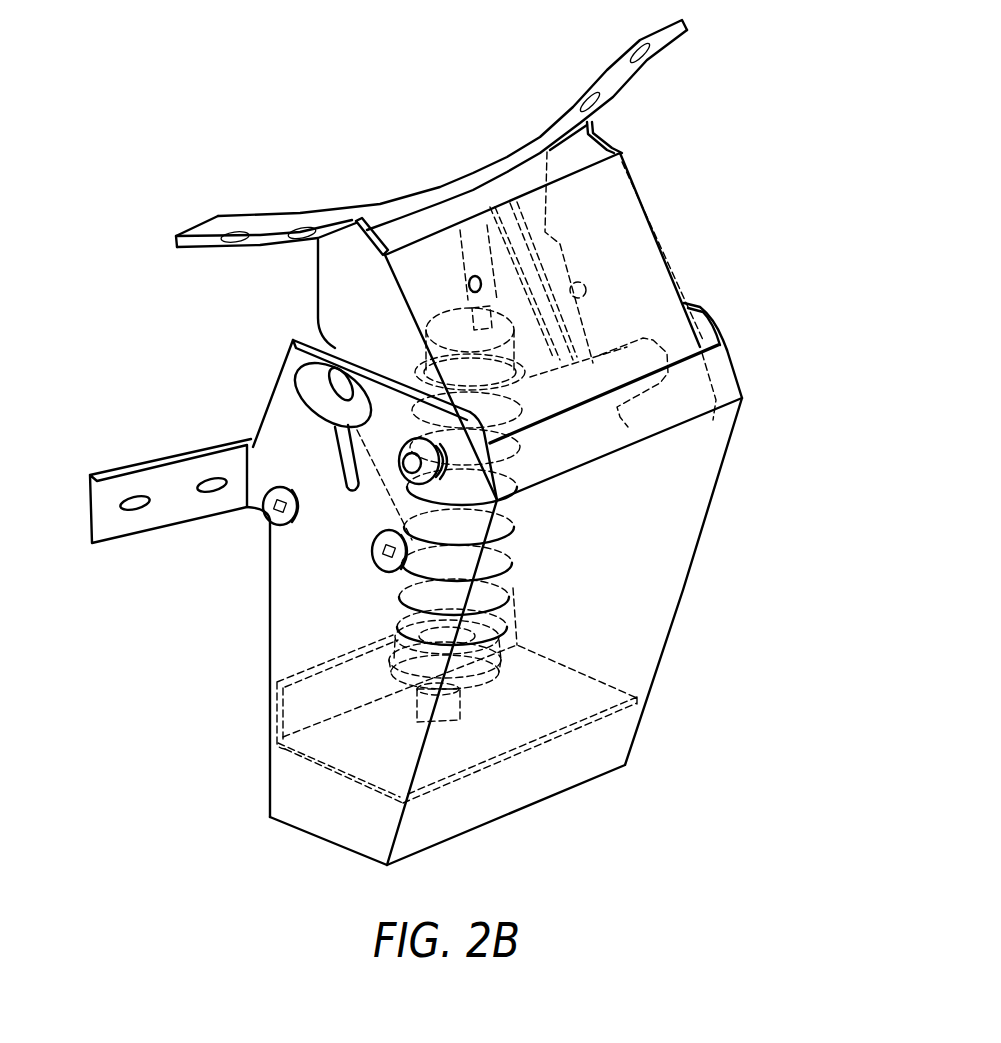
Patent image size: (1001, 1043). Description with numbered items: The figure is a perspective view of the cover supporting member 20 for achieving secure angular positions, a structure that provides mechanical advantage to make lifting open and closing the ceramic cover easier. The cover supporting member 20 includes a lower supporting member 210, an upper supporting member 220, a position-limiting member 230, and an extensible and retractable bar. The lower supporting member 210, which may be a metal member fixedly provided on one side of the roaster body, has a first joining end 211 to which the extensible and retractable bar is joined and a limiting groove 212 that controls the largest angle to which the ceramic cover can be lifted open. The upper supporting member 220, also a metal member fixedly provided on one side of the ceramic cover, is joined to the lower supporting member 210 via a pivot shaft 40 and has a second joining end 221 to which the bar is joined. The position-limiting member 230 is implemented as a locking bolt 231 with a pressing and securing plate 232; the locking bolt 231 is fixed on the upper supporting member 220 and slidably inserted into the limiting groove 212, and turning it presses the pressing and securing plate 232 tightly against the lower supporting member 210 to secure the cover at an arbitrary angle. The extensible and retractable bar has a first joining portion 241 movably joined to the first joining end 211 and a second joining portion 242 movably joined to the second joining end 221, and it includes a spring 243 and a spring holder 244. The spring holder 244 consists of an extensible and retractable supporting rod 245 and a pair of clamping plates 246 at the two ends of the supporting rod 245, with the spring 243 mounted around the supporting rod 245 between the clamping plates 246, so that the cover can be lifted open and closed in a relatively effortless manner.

The cover supporting member 20 is at (147, 312).
The pivot shaft 40 is at (643, 353).
The lower supporting member 210 is at (283, 627).
The first joining end 211 is at (452, 705).
The limiting groove 212 is at (343, 433).
The upper supporting member 220 is at (342, 277).
The second joining end 221 is at (480, 233).
The position-limiting member 230 is at (294, 388).
The locking bolt 231 is at (290, 380).
The pressing and securing plate 232 is at (337, 367).
The first joining portion 241 is at (457, 683).
The second joining portion 242 is at (442, 327).
The spring 243 is at (510, 545).
The spring holder 244 is at (742, 650).
The extensible and retractable supporting rod 245 is at (505, 622).
The clamping plate 246 is at (385, 240).